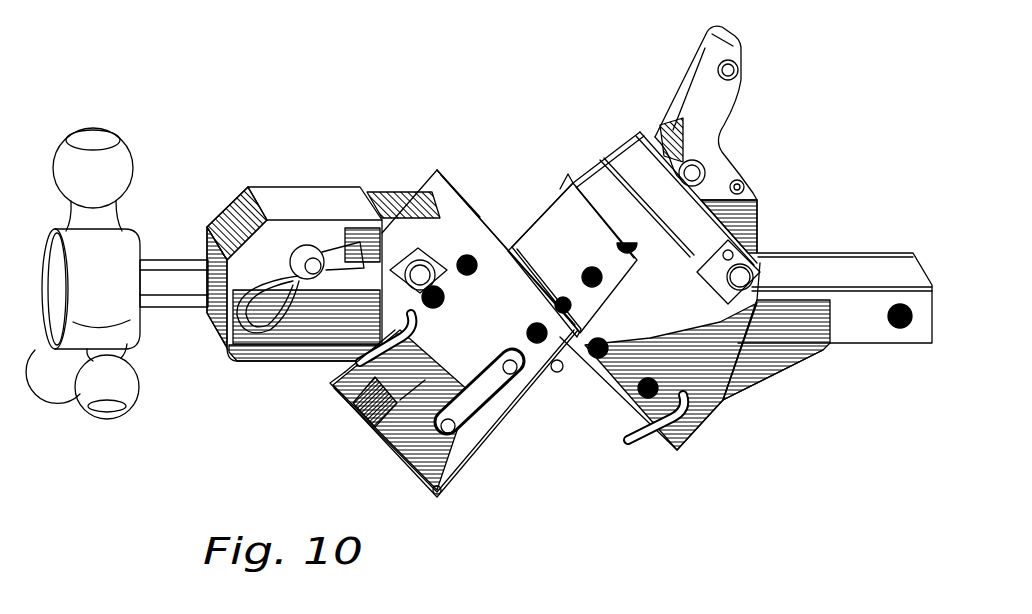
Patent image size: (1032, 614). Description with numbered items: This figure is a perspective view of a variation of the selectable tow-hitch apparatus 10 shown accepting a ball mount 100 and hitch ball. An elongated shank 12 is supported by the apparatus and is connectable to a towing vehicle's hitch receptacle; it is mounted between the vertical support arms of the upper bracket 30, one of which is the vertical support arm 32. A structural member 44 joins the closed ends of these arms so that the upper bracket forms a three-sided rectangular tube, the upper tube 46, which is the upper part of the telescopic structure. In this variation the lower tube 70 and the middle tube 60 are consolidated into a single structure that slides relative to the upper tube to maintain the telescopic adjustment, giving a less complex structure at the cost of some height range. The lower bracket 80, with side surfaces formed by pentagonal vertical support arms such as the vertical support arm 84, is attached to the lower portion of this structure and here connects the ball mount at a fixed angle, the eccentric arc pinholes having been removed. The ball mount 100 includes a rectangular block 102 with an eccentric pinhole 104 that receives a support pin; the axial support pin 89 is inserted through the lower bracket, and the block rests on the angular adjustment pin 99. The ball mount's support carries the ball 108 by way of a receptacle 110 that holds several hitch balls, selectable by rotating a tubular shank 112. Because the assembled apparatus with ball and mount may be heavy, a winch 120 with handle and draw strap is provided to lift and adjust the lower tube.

The selectable tow-hitch apparatus 10 is at (470, 262).
The elongated shank 12 is at (855, 268).
The upper bracket 30 is at (707, 403).
The vertical support arm 32 is at (620, 377).
The structural member 44 is at (640, 153).
The upper tube 46 is at (663, 207).
The middle tube 60 is at (580, 245).
The lower tube 70 is at (413, 390).
The lower bracket 80 is at (470, 243).
The vertical support arm 84 is at (465, 198).
The axial support pin 89 is at (420, 273).
The angular adjustment pin 99 is at (380, 352).
The ball mount 100 is at (247, 197).
The rectangular tube or block 102 is at (392, 248).
The eccentric pinhole 104 is at (413, 314).
The ball 108 is at (93, 160).
The receptacle 110 is at (80, 250).
The tubular shank 112 is at (173, 290).
The winch 120 is at (705, 160).